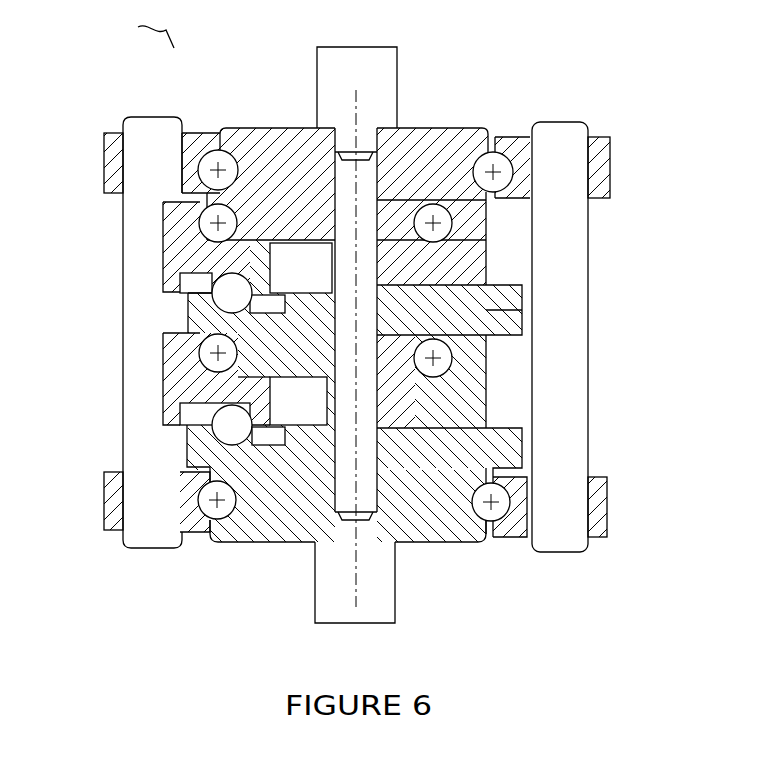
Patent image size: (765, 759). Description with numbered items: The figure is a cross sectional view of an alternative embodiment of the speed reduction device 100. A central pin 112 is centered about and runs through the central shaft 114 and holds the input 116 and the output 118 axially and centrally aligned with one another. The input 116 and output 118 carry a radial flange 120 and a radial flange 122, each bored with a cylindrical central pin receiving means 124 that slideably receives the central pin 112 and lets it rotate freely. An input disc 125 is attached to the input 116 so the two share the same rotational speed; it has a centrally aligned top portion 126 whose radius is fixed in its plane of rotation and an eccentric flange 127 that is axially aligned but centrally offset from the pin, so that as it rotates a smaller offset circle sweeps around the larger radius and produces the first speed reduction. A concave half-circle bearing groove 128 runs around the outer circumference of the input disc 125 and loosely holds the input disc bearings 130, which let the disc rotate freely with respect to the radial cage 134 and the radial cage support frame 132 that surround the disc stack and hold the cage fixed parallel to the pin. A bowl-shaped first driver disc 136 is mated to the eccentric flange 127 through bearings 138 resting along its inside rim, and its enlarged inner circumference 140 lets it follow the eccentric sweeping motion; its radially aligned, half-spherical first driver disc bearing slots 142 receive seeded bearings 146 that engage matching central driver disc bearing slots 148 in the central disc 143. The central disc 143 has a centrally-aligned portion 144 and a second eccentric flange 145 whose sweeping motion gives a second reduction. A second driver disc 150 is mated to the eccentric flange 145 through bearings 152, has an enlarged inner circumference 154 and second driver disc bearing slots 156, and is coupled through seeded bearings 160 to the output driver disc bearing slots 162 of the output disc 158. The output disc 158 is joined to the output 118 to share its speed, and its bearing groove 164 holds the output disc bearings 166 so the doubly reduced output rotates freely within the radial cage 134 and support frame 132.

The device 100 is at (131, 30).
The central pin 112 is at (370, 175).
The central shaft 114 is at (333, 143).
The input 116 is at (335, 62).
The output 118 is at (328, 585).
The radial flange 120 is at (383, 140).
The radial flange 122 is at (393, 555).
The central pin receiving means 124 is at (345, 150).
The input disc 125 is at (468, 140).
The centrally aligned top portion 126 is at (293, 157).
The eccentric flange 127 is at (238, 198).
The bearing groove 128 is at (218, 148).
The input disc bearings 130 is at (490, 165).
The radial cage support frame 132 is at (190, 518).
The radial cage 134 is at (565, 138).
The first driver disc 136 is at (175, 243).
The bearings 138 is at (205, 220).
The enlarged inner circumference 140 is at (301, 268).
The first driver disc bearing slots 142 is at (192, 280).
The central disc 143 is at (503, 302).
The centrally-aligned portion 144 is at (507, 323).
The eccentric flange 145 is at (398, 362).
The seeded bearings 146 is at (228, 300).
The central driver disc bearing slots 148 is at (205, 325).
The second driver disc 150 is at (468, 352).
The bearings 152 is at (205, 352).
The enlarged inner circumference 154 is at (282, 401).
The second driver disc bearing slots 156 is at (195, 413).
The output disc 158 is at (493, 438).
The seeded bearings 160 is at (227, 422).
The output driver disc bearing slots 162 is at (195, 461).
The bearing groove 164 is at (488, 520).
The output disc bearings 166 is at (497, 507).